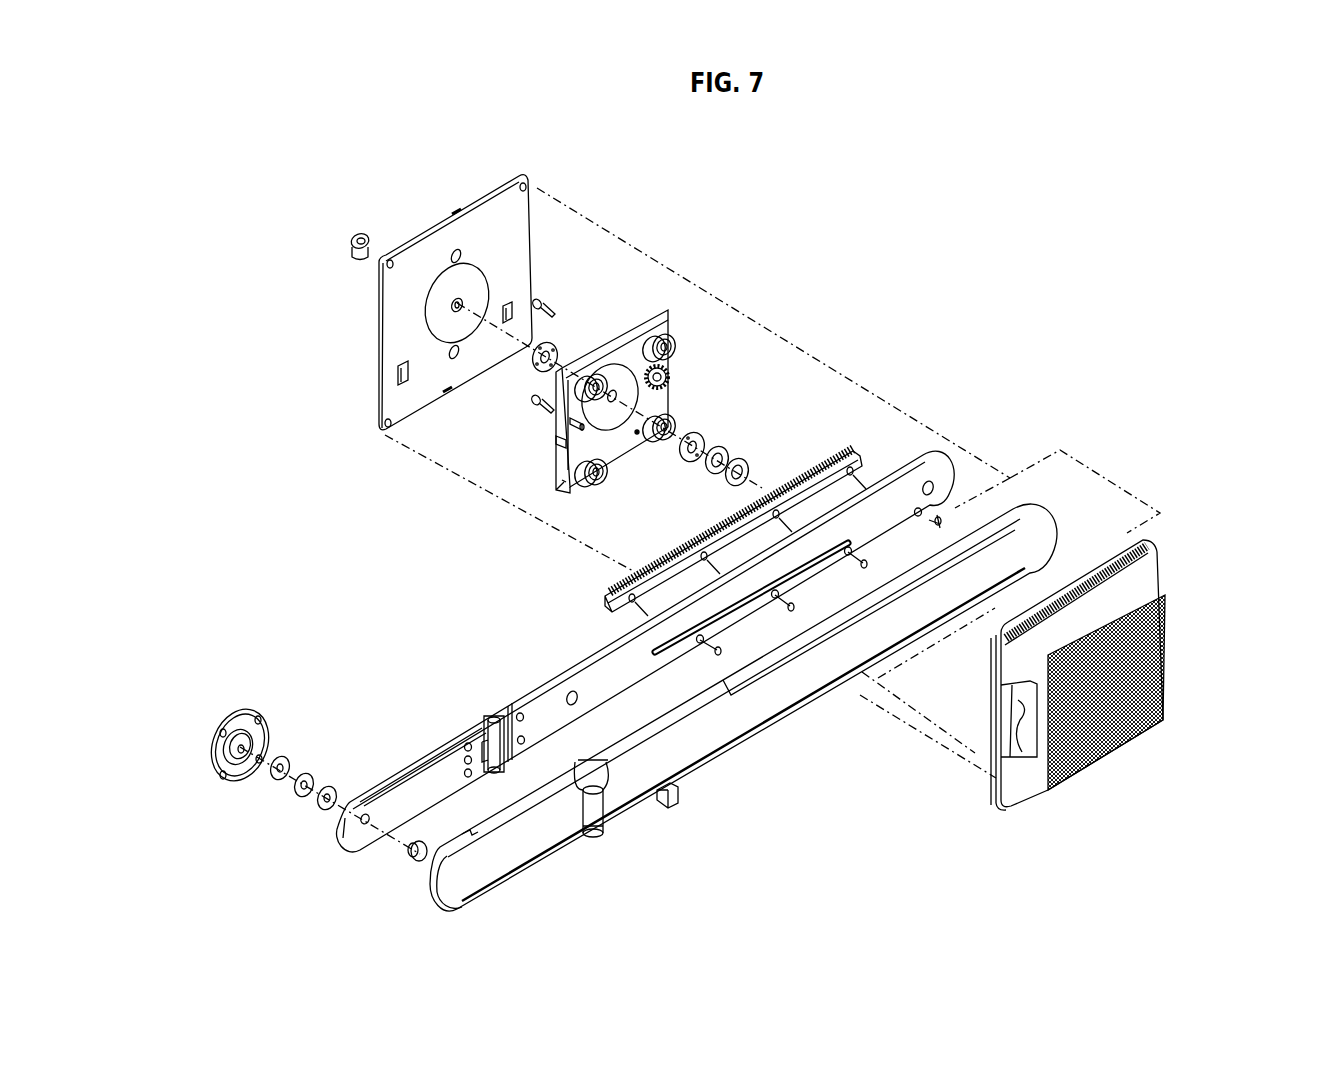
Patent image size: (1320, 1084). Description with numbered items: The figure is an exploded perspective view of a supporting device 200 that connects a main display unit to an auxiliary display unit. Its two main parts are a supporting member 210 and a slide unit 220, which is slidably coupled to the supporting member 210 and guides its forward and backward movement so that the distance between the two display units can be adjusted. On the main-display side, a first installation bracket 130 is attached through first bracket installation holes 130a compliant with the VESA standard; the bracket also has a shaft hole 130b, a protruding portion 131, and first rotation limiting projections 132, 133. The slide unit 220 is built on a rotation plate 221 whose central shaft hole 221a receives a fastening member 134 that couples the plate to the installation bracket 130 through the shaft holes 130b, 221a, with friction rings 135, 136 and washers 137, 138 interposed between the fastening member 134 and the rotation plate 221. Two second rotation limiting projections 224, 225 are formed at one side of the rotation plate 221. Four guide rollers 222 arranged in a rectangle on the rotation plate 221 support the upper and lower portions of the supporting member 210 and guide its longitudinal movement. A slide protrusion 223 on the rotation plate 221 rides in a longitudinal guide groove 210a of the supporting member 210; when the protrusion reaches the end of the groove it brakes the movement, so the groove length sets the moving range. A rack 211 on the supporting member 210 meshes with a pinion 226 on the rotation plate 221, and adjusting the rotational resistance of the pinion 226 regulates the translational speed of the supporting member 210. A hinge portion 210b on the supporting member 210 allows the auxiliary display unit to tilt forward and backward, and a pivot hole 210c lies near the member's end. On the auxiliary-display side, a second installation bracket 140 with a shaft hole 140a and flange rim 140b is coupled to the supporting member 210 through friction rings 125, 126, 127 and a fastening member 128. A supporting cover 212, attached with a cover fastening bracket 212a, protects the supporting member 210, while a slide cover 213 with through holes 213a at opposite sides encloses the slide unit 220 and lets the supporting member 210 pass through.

The supporting device 200 is at (886, 331).
The first installation bracket 130 is at (410, 258).
The first bracket installation holes 130a is at (528, 188).
The shaft hole 130b is at (450, 305).
The protruding portion 131 is at (487, 295).
The first rotation limiting projection 132 is at (406, 384).
The first rotation limiting projection 133 is at (508, 324).
The fastening member 134 is at (350, 243).
The friction ring 135 is at (548, 343).
The friction ring 136 is at (698, 435).
The washer 137 is at (722, 448).
The washer 138 is at (742, 460).
The second installation bracket 140 is at (245, 713).
The shaft hole 140a is at (258, 717).
The flange rim 140b is at (226, 733).
The friction ring 125 is at (335, 789).
The friction ring 126 is at (308, 774).
The friction ring 127 is at (285, 758).
The fastening member 128 is at (412, 856).
The supporting member 210 is at (545, 660).
The guide groove 210a is at (805, 568).
The hinge portion 210b is at (494, 716).
The pivot hole 210c is at (360, 824).
The rack 211 is at (862, 458).
The supporting cover 212 is at (700, 765).
The cover fastening bracket 212a is at (673, 806).
The slide cover 213 is at (1165, 562).
The through holes 213a is at (1020, 703).
The slide unit 220 is at (651, 285).
The rotation plate 221 is at (668, 312).
The shaft hole 221a is at (563, 468).
The guide rollers 222 is at (636, 338).
The slide protrusion 223 is at (568, 423).
The second rotation limiting projection 224 is at (554, 442).
The second rotation limiting projection 225 is at (555, 395).
The pinion 226 is at (668, 375).